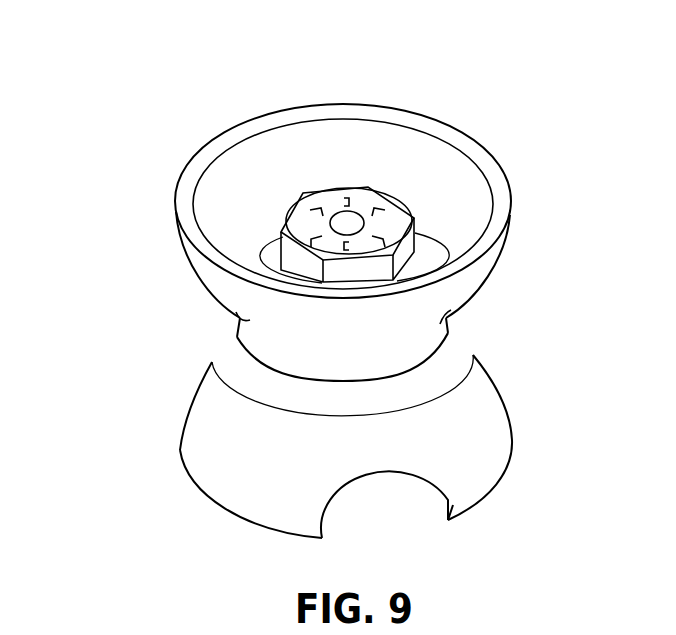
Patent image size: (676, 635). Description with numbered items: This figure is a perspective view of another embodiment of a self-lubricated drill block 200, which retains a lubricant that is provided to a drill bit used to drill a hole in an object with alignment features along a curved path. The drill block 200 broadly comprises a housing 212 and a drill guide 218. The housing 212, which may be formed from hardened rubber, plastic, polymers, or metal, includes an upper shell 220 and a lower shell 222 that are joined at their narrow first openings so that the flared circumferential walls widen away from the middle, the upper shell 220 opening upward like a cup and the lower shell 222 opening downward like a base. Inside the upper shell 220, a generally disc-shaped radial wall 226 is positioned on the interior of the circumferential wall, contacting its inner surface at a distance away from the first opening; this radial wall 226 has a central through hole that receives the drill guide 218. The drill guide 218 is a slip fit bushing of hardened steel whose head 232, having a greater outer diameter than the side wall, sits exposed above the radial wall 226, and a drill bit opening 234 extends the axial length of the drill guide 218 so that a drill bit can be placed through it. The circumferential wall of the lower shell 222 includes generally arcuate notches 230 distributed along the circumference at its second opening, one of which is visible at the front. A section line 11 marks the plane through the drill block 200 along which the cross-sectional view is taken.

The self-lubricated drill block 200 is at (304, 311).
The section line 11 is at (320, 102).
The drill guide 218 is at (404, 178).
The upper shell 220 is at (303, 199).
The housing 212 is at (143, 312).
The lower shell 222 is at (314, 462).
The radial wall 226 is at (424, 262).
The notch 230 is at (407, 515).
The head 232 is at (326, 207).
The drill bit opening 234 is at (341, 220).